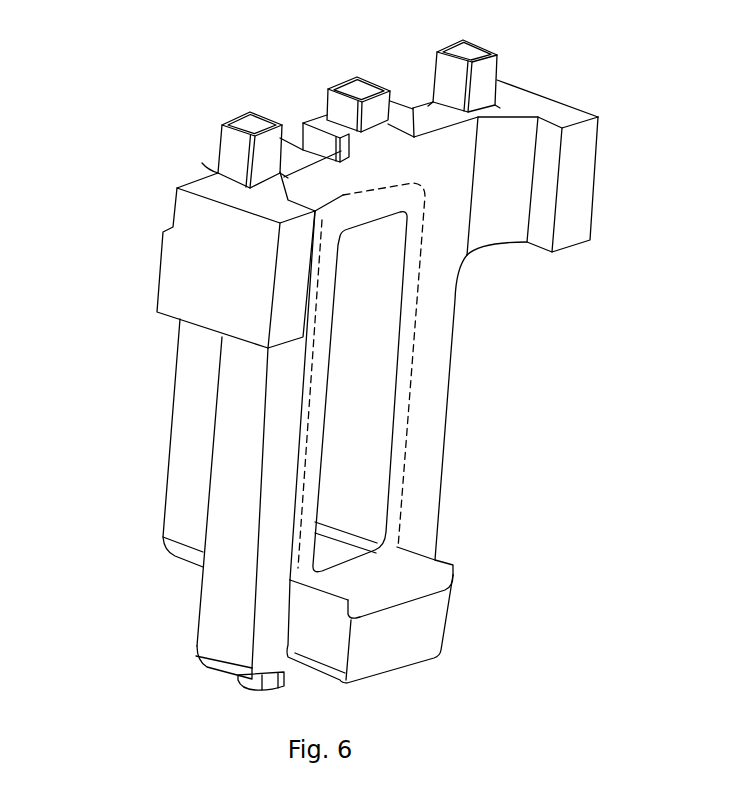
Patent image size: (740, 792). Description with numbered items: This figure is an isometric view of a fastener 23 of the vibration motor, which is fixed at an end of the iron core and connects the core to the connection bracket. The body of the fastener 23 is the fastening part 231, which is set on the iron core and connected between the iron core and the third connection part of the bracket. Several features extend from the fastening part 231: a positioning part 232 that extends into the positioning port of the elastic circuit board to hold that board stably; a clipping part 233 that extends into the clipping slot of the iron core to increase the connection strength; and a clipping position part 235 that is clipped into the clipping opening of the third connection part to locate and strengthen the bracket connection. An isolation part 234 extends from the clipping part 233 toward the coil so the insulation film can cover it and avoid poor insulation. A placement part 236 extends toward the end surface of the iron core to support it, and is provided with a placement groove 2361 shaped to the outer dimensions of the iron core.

The fastener 23 is at (335, 43).
The fastening part 231 is at (432, 393).
The positioning part 232 is at (230, 123).
The clipping part 233 is at (395, 458).
The isolation part 234 is at (185, 467).
The clipping position part 235 is at (250, 687).
The placement part 236 is at (432, 640).
The placement groove 2361 is at (402, 597).